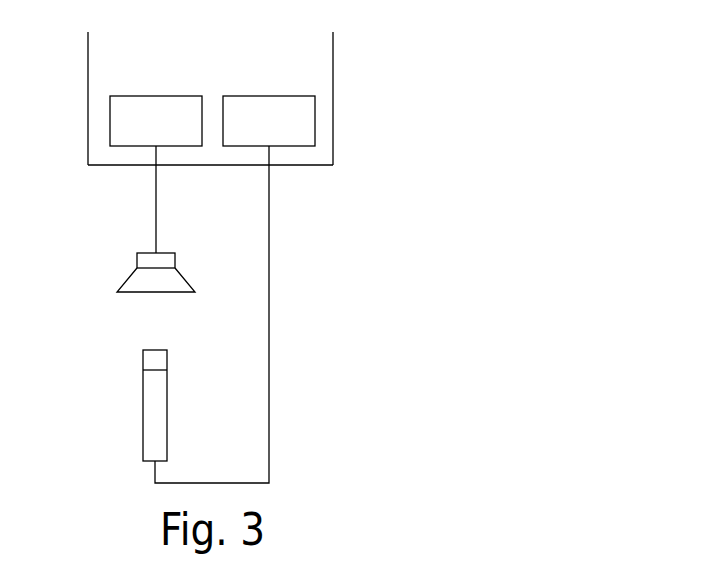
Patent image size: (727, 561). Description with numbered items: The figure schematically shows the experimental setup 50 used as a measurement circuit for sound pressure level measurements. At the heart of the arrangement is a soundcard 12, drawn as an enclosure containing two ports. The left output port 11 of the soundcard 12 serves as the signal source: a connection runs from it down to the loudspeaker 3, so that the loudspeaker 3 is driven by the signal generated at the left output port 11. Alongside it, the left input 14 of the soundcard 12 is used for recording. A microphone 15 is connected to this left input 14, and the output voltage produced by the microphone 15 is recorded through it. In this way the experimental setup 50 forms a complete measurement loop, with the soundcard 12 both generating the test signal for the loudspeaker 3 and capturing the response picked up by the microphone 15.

The experimental setup 50 is at (360, 90).
The soundcard 12 is at (135, 155).
The left output port 11 is at (156, 174).
The left input 14 is at (235, 289).
The loudspeaker 3 is at (138, 280).
The microphone 15 is at (152, 404).